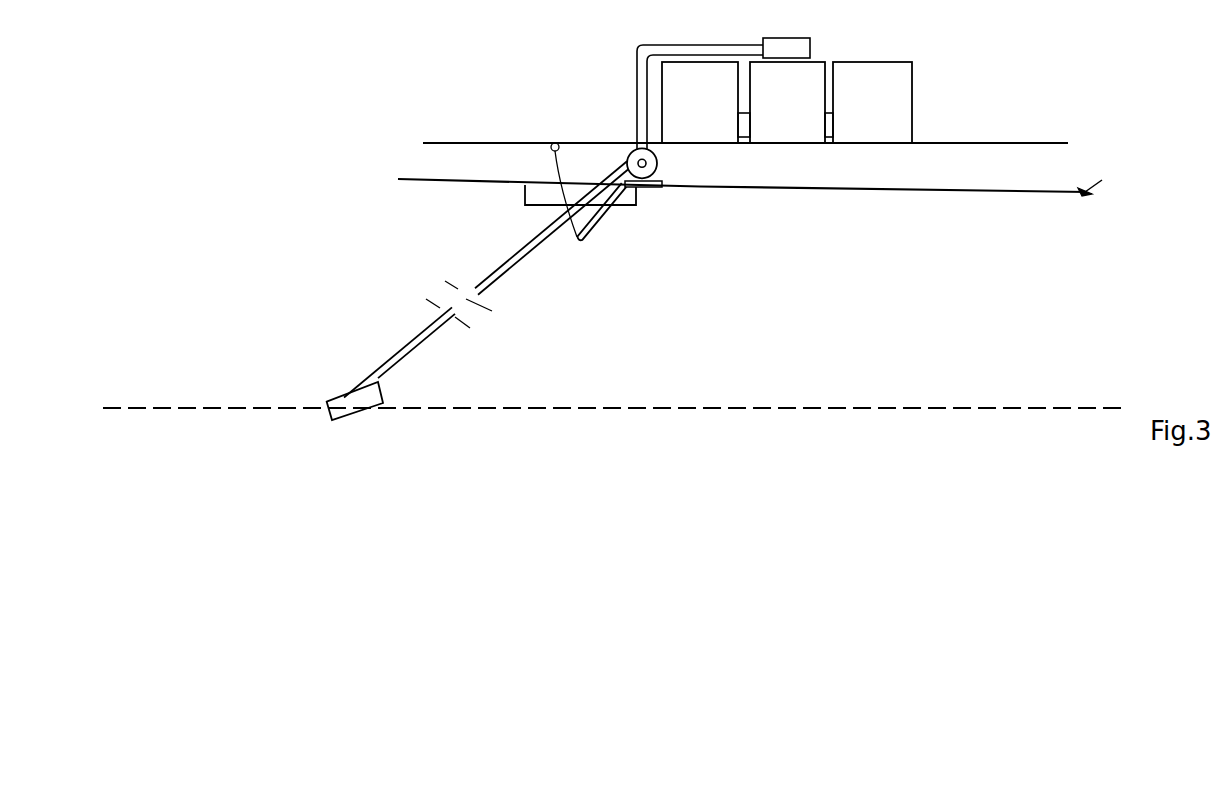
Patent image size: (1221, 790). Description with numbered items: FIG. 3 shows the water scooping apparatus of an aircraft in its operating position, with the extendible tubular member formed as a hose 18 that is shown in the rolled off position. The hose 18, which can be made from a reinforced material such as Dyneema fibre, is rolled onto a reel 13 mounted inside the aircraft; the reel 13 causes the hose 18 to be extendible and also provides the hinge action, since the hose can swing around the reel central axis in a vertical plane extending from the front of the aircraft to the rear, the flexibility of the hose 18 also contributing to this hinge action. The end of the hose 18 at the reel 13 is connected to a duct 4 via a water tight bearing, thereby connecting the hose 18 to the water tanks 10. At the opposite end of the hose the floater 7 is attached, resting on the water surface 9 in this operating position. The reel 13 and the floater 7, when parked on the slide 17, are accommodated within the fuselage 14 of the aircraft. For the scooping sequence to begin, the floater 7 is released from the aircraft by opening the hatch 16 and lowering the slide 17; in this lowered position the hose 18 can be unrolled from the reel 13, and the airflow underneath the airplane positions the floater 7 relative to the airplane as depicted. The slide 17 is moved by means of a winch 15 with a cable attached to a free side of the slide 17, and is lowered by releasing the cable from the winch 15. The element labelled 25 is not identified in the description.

The duct 4 is at (637, 73).
The floater 7 is at (340, 400).
The water surface 9 is at (1012, 406).
The water tanks 10 is at (912, 73).
The reel 13 is at (650, 174).
The fuselage 14 is at (838, 193).
The winch 15 is at (553, 143).
The hatch 16 is at (518, 193).
The slide 17 is at (613, 216).
The hose 18 is at (513, 263).
The upper deck 25 is at (1032, 142).